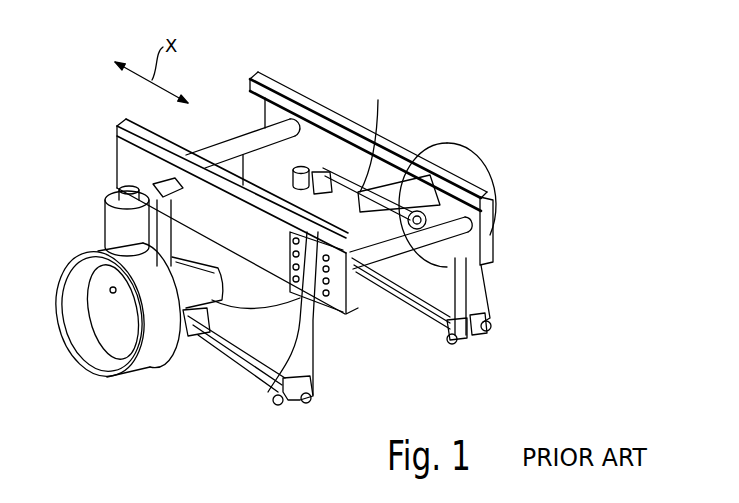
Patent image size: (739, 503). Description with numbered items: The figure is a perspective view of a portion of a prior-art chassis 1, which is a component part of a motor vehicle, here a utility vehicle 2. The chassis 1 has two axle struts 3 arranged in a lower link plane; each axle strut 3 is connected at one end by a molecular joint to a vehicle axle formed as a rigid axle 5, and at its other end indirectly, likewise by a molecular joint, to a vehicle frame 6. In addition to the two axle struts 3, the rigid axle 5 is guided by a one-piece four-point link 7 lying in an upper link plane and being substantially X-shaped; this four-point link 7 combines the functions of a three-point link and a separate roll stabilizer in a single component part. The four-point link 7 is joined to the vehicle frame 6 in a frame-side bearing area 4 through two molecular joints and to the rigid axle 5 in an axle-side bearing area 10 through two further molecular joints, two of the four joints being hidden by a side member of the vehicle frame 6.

The chassis 1 is at (360, 110).
The utility vehicle 2 is at (432, 82).
The axle struts 3 is at (233, 363).
The frame-side bearing area 4 is at (425, 213).
The rigid axle 5 is at (180, 283).
The vehicle frame 6 is at (282, 77).
The four-point link 7 is at (368, 180).
The axle-side bearing area 10 is at (312, 167).